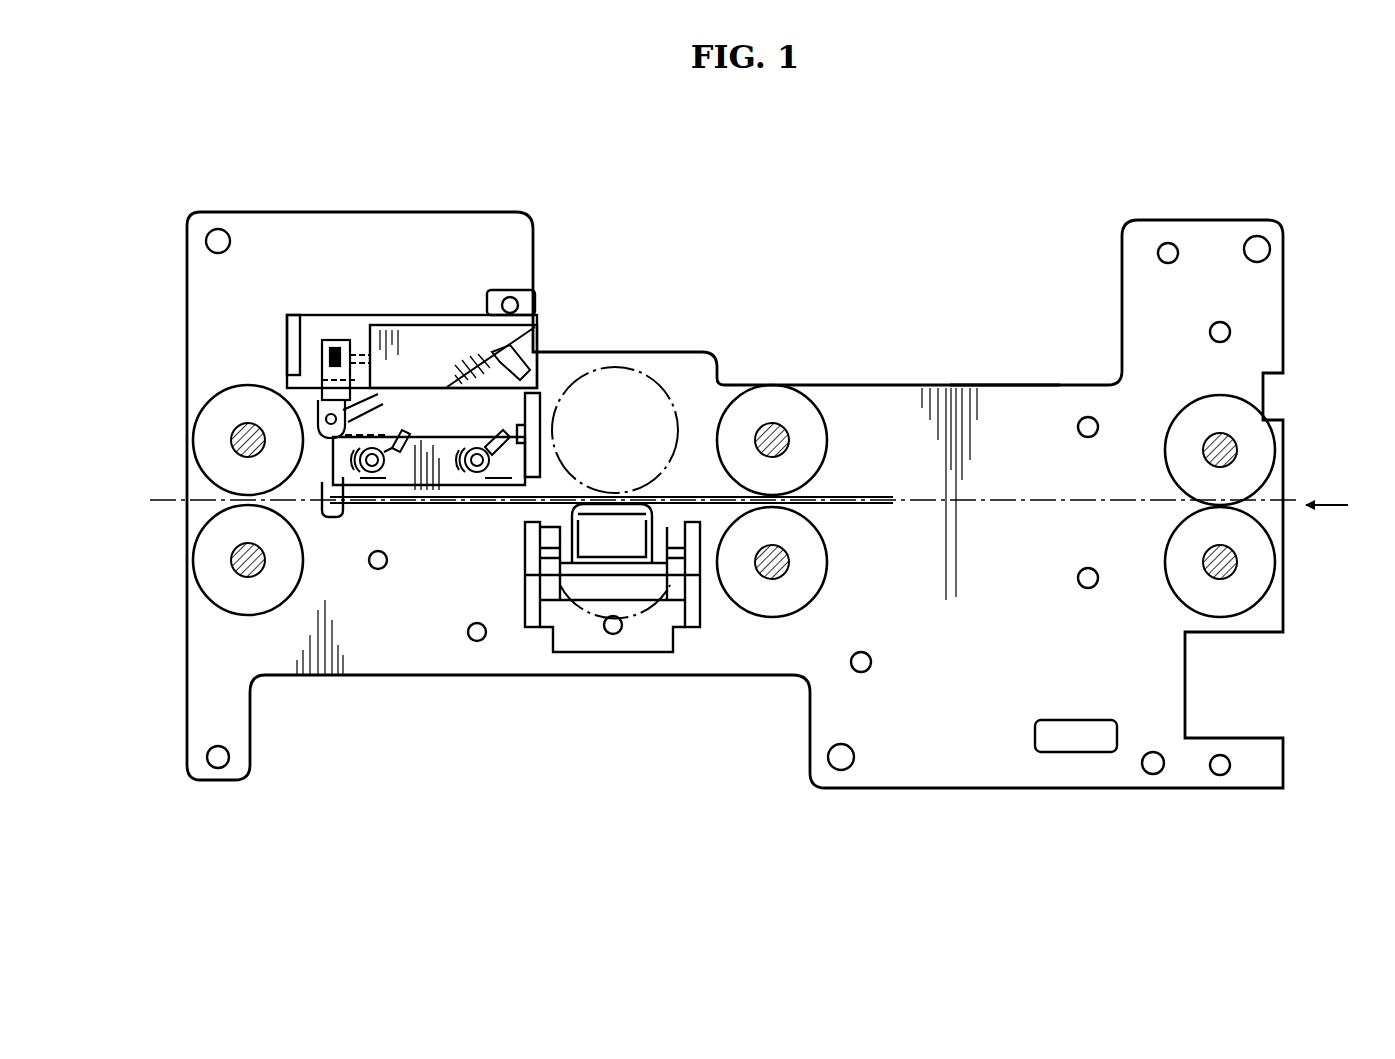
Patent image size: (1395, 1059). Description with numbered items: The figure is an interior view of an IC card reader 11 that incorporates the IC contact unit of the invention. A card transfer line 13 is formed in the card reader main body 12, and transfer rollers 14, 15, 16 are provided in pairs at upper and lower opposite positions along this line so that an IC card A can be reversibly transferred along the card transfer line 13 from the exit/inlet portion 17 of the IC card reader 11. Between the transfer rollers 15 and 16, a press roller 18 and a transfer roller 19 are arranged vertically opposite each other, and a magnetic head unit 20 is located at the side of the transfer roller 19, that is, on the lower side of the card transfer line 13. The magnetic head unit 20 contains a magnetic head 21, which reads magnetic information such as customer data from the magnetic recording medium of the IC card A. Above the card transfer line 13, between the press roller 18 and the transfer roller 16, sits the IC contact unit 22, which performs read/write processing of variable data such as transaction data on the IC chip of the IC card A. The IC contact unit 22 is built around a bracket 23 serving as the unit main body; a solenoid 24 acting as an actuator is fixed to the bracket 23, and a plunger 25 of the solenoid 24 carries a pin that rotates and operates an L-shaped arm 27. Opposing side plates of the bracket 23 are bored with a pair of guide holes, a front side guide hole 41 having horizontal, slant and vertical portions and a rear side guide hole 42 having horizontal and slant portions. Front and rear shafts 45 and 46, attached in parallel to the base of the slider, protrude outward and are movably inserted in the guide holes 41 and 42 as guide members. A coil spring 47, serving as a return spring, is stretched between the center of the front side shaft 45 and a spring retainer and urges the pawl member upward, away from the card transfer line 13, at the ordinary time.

The IC card reader 11 is at (790, 270).
The card reader main body 12 is at (1000, 388).
The card transfer line 13 is at (978, 505).
The transfer rollers 14 is at (1190, 413).
The transfer rollers 15 is at (813, 440).
The transfer rollers 16 is at (205, 430).
The exit/inlet portion 17 is at (1272, 502).
The press roller 18 is at (655, 382).
The transfer roller 19 is at (588, 608).
The magnetic head unit 20 is at (659, 660).
The magnetic head 21 is at (619, 516).
The IC contact unit 22 is at (415, 312).
The bracket 23 is at (518, 405).
The solenoid 24 is at (455, 333).
The plunger 25 is at (352, 342).
The L-shaped arm 27 is at (316, 406).
The front side guide hole 41 is at (402, 440).
The rear side guide hole 42 is at (492, 440).
The front side shaft 45 is at (373, 480).
The rear side shaft 46 is at (443, 480).
The coil spring 47 is at (525, 330).
The IC card A is at (498, 480).